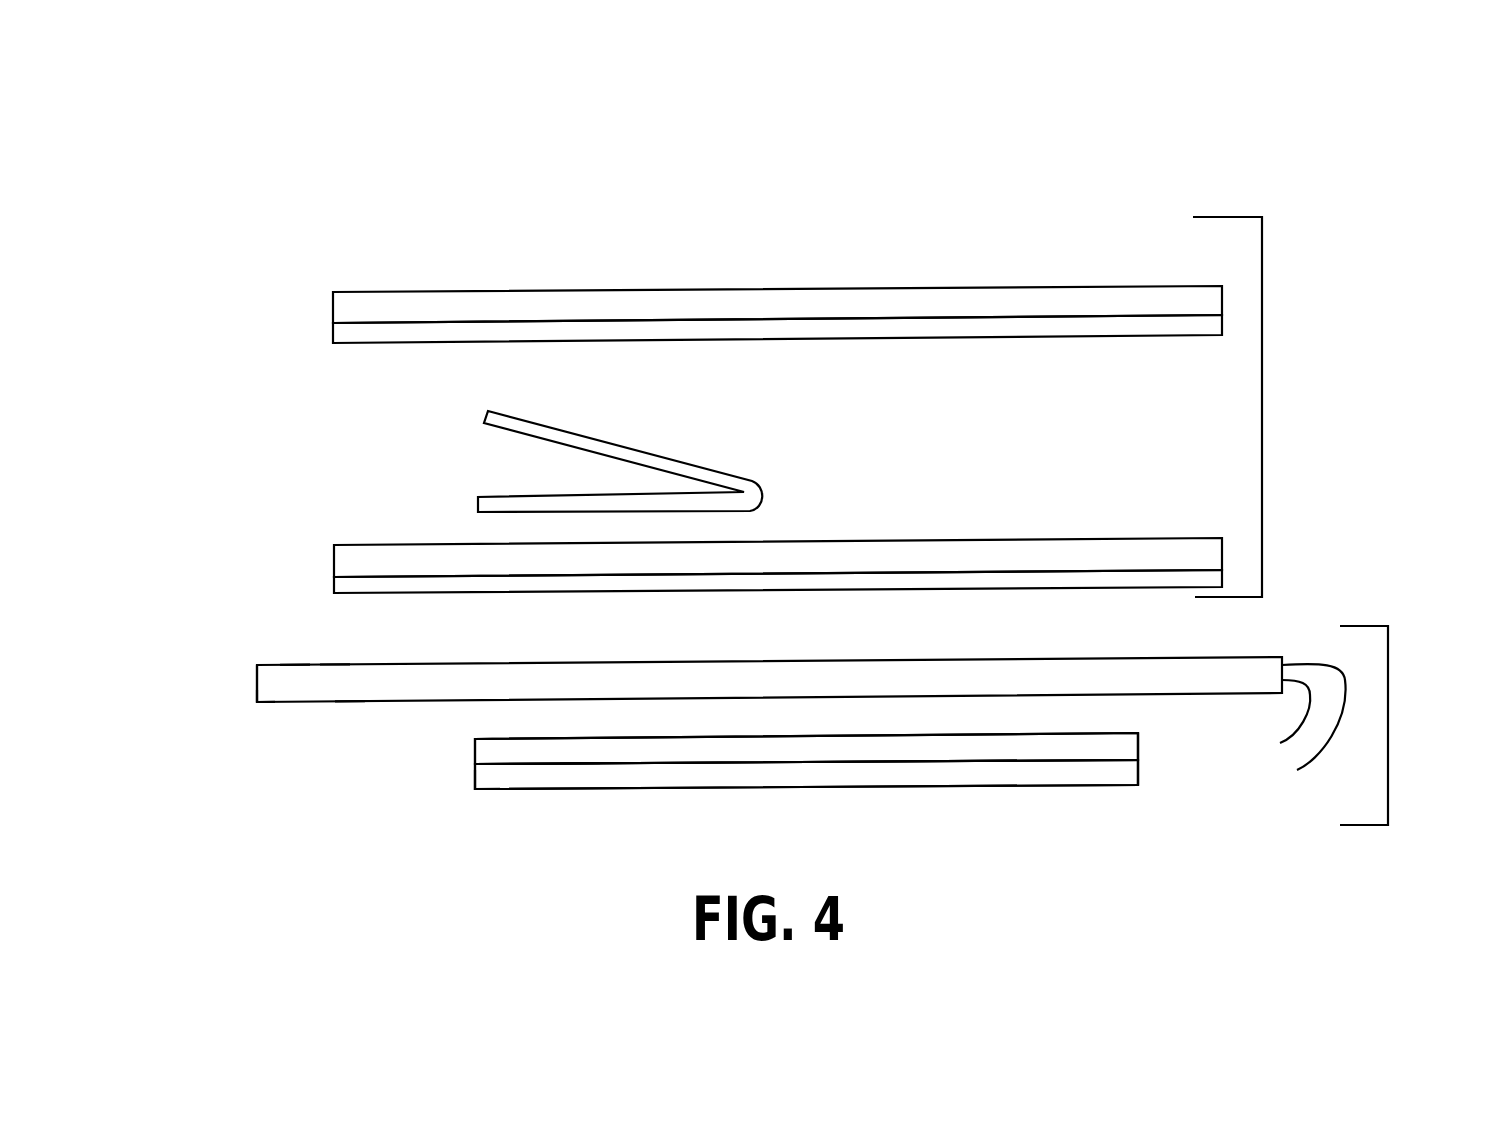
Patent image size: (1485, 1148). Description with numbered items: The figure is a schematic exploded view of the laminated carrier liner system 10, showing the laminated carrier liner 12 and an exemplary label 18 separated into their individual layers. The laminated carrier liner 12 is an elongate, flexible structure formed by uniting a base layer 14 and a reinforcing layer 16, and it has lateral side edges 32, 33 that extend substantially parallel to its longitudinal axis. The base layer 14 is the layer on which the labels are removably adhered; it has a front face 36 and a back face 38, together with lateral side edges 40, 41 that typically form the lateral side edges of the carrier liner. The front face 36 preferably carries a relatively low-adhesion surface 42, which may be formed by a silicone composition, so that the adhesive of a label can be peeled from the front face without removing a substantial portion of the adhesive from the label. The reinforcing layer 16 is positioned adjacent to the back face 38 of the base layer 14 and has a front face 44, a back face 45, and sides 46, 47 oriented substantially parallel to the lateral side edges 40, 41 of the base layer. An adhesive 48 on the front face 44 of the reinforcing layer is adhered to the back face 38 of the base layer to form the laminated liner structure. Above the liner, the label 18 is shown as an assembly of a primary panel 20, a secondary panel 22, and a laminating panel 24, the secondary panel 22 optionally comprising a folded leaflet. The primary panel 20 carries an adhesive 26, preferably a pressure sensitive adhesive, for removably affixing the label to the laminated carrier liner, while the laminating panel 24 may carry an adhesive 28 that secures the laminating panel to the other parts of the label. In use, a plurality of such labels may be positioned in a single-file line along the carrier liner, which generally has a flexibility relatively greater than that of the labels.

The laminated carrier liner system 10 is at (1327, 222).
The laminated carrier liner 12 is at (1388, 725).
The base layer 14 is at (1128, 673).
The reinforcing layer 16 is at (903, 775).
The label 18 is at (1262, 406).
The primary panel 20 is at (979, 551).
The secondary panel 22 is at (752, 487).
The laminating panel 24 is at (515, 305).
The adhesive 26 is at (825, 582).
The adhesive 28 is at (707, 330).
The lateral side edge 32 is at (1297, 770).
The lateral side edge 33 is at (257, 680).
The front face 36 is at (297, 662).
The back face 38 is at (349, 703).
The lateral side edge 40 is at (1280, 743).
The lateral side edge 41 is at (257, 703).
The low-adhesion surface 42 is at (335, 663).
The front face 44 is at (573, 762).
The back face 45 is at (612, 780).
The side 46 is at (1138, 770).
The side 47 is at (473, 780).
The adhesive 48 is at (752, 753).